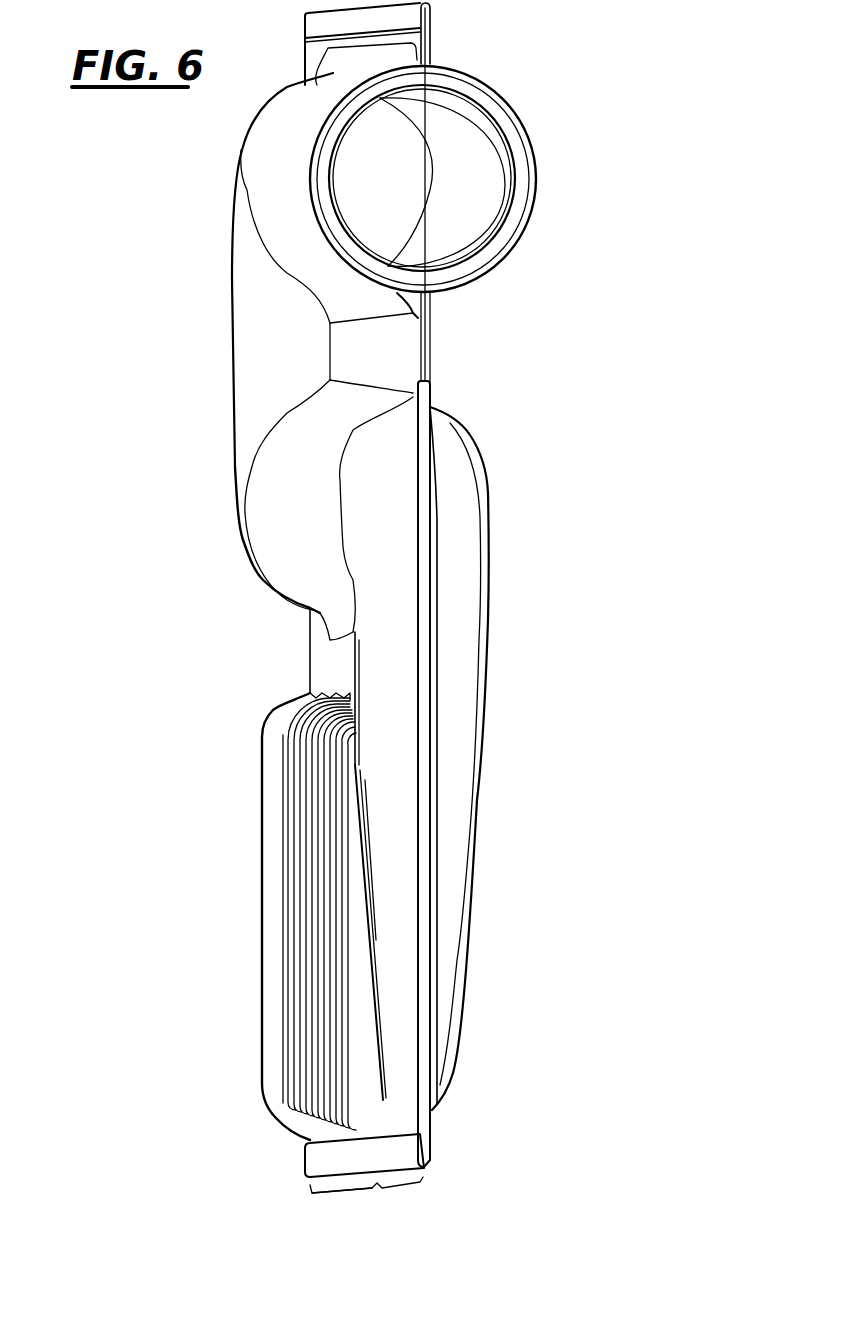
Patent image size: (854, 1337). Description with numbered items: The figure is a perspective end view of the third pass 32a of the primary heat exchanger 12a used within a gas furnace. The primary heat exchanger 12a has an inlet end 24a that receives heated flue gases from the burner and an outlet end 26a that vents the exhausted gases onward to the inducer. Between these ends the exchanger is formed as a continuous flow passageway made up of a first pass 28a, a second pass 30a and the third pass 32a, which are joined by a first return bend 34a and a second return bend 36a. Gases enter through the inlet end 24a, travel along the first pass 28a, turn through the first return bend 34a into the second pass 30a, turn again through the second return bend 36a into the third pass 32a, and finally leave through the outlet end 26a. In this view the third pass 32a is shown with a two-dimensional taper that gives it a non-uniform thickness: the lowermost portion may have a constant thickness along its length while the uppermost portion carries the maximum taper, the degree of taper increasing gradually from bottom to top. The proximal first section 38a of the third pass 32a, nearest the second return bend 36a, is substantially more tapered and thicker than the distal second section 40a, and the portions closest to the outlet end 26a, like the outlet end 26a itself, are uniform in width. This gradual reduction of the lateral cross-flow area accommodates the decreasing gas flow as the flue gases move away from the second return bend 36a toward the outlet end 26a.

The primary heat exchanger 12a is at (612, 352).
The inlet end 24a is at (410, 193).
The first pass 28a is at (537, 181).
The first return bend 34a is at (298, 331).
The second pass 30a is at (300, 512).
The second return bend 36a is at (453, 660).
The outlet end 26a is at (270, 990).
The third pass 32a is at (350, 860).
The proximal first section 38a is at (399, 1189).
The distal second section 40a is at (372, 1188).